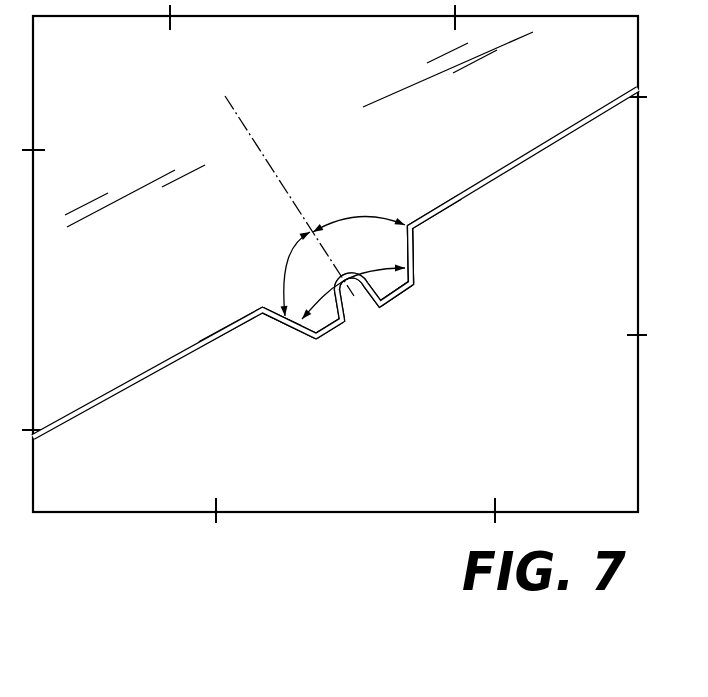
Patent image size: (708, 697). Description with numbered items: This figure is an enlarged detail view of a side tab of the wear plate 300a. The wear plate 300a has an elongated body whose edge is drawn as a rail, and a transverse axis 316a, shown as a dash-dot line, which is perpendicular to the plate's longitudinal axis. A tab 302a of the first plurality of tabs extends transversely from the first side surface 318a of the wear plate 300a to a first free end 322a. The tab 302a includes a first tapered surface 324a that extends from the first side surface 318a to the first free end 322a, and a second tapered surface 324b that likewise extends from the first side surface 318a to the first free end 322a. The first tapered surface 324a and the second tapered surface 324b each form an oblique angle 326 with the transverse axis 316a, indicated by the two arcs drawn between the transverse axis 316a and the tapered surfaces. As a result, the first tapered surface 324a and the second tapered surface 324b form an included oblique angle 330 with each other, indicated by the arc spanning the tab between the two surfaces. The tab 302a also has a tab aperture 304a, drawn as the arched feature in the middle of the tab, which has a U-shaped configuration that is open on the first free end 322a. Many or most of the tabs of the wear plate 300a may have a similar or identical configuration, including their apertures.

The wear plate 300a is at (532, 128).
The tab 302a is at (406, 294).
The tab aperture 304a is at (360, 304).
The transverse axis 316a is at (253, 137).
The first side surface 318a is at (490, 175).
The first free end 322a is at (323, 339).
The first tapered surface 324a is at (270, 320).
The second tapered surface 324b is at (412, 266).
The oblique angle 326 is at (365, 216).
The included oblique angle 330 is at (366, 269).